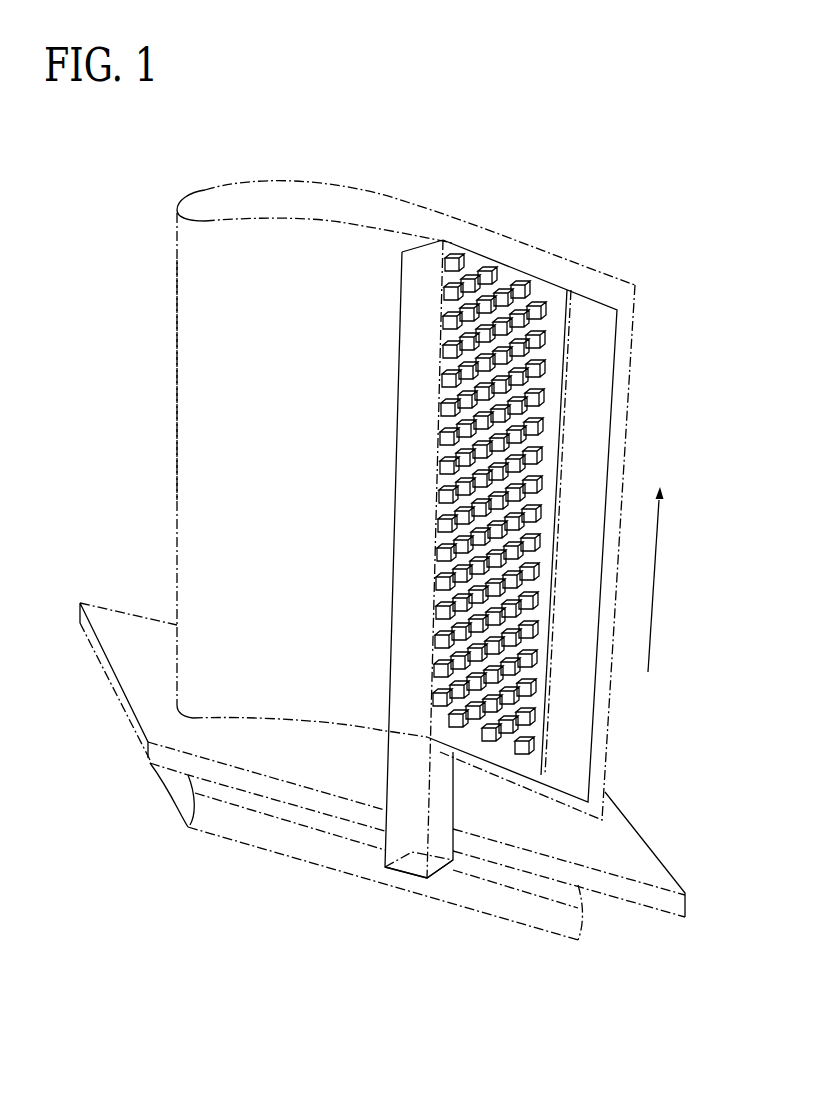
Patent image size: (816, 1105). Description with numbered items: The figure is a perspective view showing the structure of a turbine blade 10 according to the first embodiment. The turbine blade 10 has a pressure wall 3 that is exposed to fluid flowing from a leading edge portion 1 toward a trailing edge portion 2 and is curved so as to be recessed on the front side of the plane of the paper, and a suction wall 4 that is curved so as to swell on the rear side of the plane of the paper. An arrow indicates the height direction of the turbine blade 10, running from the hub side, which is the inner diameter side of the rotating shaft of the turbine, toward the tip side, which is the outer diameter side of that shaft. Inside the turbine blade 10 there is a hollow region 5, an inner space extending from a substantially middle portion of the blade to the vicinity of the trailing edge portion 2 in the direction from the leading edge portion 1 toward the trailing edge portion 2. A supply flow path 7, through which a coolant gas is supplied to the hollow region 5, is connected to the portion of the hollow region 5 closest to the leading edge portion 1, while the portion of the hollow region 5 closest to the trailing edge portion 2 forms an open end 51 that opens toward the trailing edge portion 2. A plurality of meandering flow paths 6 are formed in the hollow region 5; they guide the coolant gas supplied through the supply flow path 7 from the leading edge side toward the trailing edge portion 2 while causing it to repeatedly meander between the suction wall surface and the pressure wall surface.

The leading edge portion 1 is at (177, 209).
The trailing edge portion 2 is at (633, 383).
The pressure wall 3 is at (227, 350).
The suction wall 4 is at (443, 213).
The hollow region 5 is at (410, 422).
The open end 51 is at (563, 460).
The meandering flow paths 6 is at (540, 663).
The supply flow path 7 is at (410, 870).
The turbine blade 10 is at (656, 233).